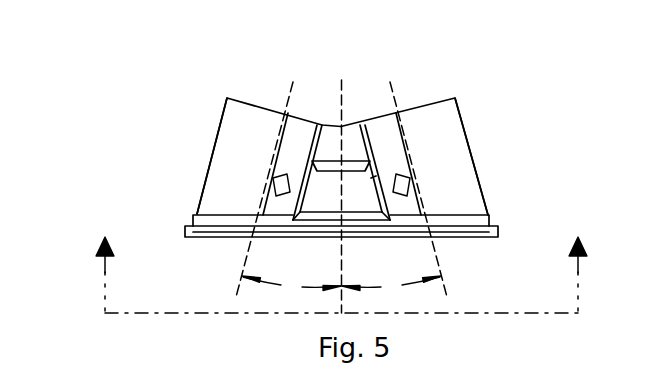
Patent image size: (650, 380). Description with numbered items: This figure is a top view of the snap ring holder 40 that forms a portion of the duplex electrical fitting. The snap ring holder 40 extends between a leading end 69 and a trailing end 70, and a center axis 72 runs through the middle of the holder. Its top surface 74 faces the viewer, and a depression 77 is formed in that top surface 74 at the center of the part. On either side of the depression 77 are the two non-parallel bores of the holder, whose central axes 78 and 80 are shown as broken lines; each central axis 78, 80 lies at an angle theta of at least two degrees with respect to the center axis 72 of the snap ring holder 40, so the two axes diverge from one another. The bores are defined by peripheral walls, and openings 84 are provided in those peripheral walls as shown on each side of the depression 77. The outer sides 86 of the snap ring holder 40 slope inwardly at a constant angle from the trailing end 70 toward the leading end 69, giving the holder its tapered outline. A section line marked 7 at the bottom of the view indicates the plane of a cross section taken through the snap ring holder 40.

The snap ring holder 40 is at (113, 119).
The leading end 69 is at (419, 106).
The trailing end 70 is at (186, 239).
The center axis 72 is at (342, 97).
The top surface 74 is at (260, 136).
The depression 77 is at (338, 202).
The central axis 78 is at (290, 95).
The central axis 80 is at (393, 97).
The openings 84 is at (281, 187).
The sides 86 is at (211, 161).
The section line 7- 7 is at (341, 275).